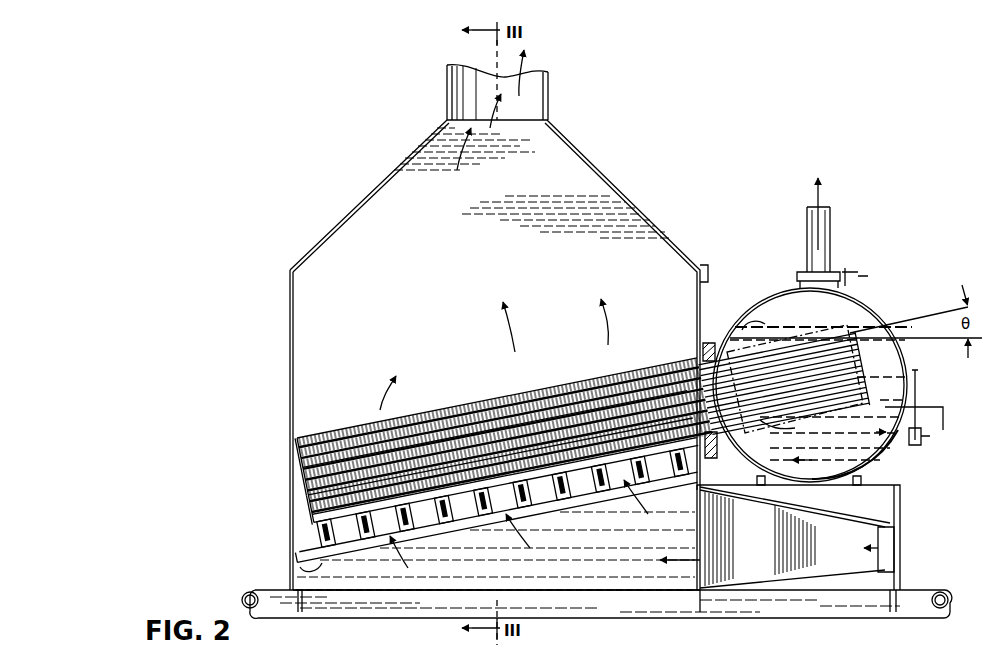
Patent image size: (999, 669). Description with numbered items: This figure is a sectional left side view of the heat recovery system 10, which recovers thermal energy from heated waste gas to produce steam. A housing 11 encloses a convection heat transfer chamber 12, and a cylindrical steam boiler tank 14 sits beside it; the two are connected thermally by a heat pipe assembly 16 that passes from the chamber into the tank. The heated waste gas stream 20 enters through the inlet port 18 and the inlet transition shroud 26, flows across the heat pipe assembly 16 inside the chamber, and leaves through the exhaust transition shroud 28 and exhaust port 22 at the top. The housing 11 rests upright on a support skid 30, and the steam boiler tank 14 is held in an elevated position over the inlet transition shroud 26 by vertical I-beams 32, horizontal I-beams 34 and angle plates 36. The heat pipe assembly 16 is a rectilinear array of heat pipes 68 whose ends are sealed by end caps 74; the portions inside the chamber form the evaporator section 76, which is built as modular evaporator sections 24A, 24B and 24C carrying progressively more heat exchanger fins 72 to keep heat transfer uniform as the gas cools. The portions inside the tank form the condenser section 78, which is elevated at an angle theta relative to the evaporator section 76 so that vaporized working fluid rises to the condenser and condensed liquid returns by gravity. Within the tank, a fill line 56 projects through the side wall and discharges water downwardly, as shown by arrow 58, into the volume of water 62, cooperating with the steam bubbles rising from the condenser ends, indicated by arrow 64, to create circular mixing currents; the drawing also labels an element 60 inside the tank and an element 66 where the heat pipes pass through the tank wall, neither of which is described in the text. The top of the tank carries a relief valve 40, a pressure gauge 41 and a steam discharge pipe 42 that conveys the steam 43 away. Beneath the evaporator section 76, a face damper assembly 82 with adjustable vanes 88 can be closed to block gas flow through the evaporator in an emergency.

The heat recovery system 10 is at (662, 186).
The housing 11 is at (289, 280).
The convection heat transfer chamber 12 is at (292, 330).
The steam boiler tank 14 is at (772, 292).
The heat pipe assembly 16 is at (484, 392).
The inlet port 18 is at (896, 566).
The heated waste gas stream 20 is at (528, 58).
The exhaust port 22 is at (548, 96).
The evaporator section 24A is at (304, 505).
The evaporator section 24B is at (299, 480).
The evaporator section 24C is at (297, 458).
The inlet transition shroud 26 is at (816, 566).
The exhaust transition shroud 28 is at (366, 198).
The support skid 30 is at (243, 614).
The vertical I-beams 32 is at (901, 516).
The horizontal I-beams 34 is at (840, 506).
The angle plates 36 is at (862, 483).
The relief valve 40 is at (806, 256).
The pressure gauge 41 is at (708, 268).
The steam discharge pipe 42 is at (833, 232).
The steam 43 is at (820, 194).
The fill line 56 is at (948, 416).
The downward water flow 58 is at (876, 433).
The drum interior flow 60 is at (815, 460).
The volume of water 62 is at (888, 452).
The rising steam bubbles 64 is at (768, 428).
The seal 66 is at (740, 452).
The heat pipes 68 is at (810, 346).
The heat exchanger fins 72 is at (346, 432).
The end caps 74 is at (860, 378).
The evaporator section 76 is at (305, 434).
The condenser section 78 is at (748, 326).
The face damper assembly 82 is at (318, 546).
The adjustable vanes 88 is at (297, 564).